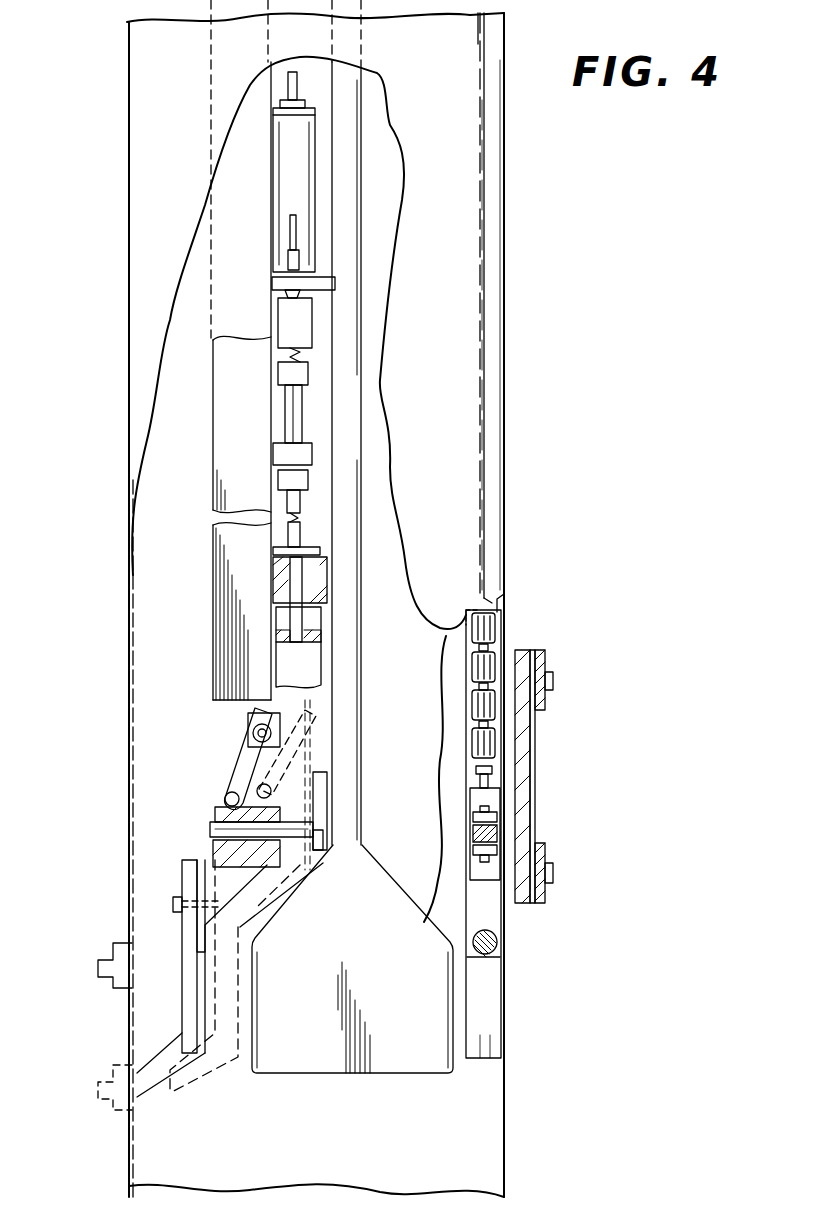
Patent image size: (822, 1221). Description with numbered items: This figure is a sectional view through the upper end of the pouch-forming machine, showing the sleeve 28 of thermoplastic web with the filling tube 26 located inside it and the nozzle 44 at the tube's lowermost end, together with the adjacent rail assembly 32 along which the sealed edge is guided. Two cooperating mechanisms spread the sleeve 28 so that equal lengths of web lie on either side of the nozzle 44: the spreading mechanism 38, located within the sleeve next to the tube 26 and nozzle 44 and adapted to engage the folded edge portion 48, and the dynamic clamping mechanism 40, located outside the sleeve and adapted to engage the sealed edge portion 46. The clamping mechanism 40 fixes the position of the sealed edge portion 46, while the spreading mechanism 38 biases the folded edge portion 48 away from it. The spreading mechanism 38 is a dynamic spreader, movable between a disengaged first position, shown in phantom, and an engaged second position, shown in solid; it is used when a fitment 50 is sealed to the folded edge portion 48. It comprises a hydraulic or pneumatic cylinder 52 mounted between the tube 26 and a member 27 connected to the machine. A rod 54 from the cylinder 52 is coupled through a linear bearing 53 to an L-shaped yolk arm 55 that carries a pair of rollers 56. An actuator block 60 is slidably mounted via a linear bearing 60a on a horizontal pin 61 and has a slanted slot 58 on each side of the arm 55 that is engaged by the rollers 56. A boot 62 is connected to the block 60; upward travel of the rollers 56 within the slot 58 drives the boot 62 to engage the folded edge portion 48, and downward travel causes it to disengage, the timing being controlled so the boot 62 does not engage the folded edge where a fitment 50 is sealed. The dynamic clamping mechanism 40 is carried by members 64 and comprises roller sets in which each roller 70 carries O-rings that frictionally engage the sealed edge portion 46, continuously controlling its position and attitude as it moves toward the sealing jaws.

The filling tube 26 is at (350, 280).
The member 27 is at (257, 283).
The sleeve 28 is at (467, 353).
The rail assembly 32 is at (523, 548).
The spreading mechanism 38 is at (218, 725).
The dynamic clamping mechanism 40 is at (520, 627).
The nozzle 44 is at (430, 1043).
The sealed edge portion 46 is at (500, 473).
The folded edge portion 48 is at (129, 600).
The fitment 50 is at (103, 940).
The cylinder 52 is at (285, 178).
The linear bearing 53 is at (313, 577).
The rod 54 is at (293, 426).
The L-shaped yolk arm 55 is at (252, 778).
The rollers 56 is at (240, 713).
The slanted slot 58 is at (227, 792).
The actuator block 60 is at (228, 753).
The linear bearing 60a is at (217, 852).
The horizontal pin 61 is at (210, 825).
The boot 62 is at (188, 990).
The members 64 is at (540, 663).
The roller 70 is at (507, 620).